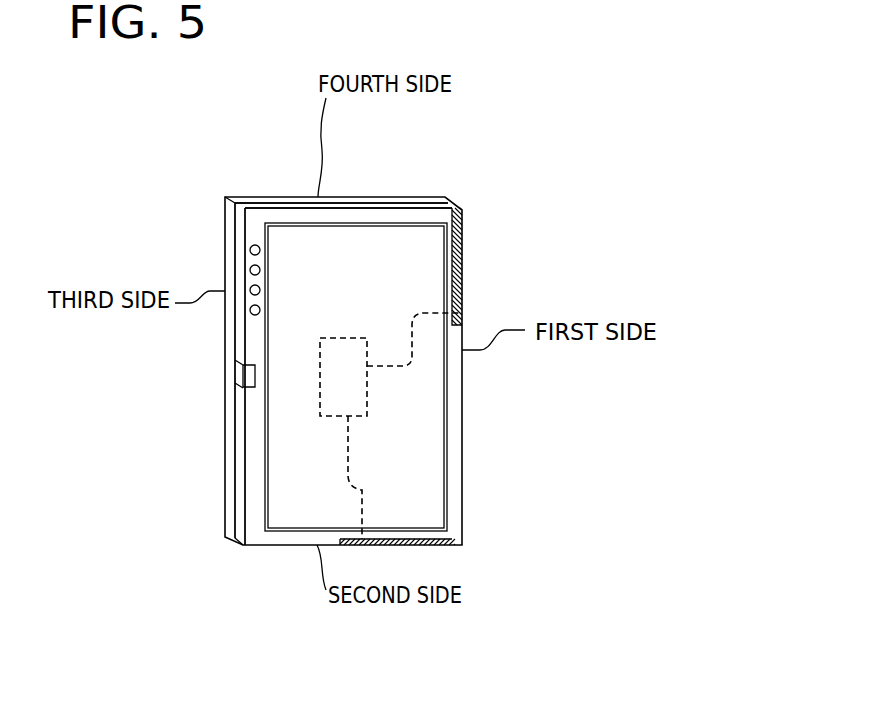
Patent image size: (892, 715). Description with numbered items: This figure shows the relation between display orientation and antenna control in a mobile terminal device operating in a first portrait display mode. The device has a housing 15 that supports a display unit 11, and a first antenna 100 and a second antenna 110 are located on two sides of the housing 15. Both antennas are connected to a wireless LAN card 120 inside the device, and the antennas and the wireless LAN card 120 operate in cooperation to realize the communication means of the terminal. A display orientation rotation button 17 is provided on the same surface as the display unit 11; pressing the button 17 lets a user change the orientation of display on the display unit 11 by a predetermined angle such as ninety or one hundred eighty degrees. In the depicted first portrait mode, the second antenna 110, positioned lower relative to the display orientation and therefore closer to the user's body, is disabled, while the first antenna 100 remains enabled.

The display unit 11 is at (418, 223).
The housing 15 is at (351, 206).
The display orientation rotation button 17 is at (257, 245).
The first antenna 100 is at (462, 268).
The second antenna 110 is at (432, 541).
The wireless LAN card 120 is at (367, 388).